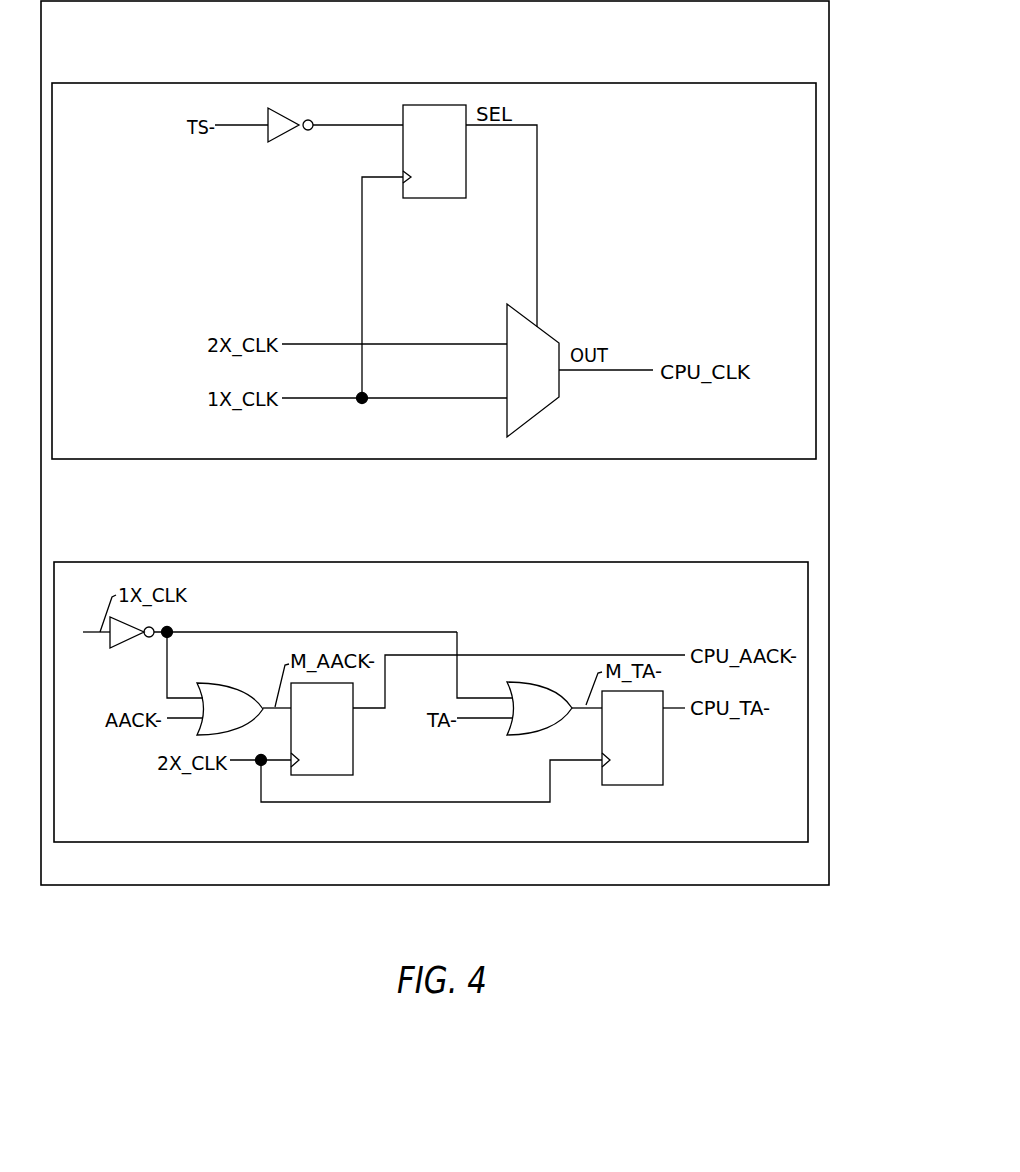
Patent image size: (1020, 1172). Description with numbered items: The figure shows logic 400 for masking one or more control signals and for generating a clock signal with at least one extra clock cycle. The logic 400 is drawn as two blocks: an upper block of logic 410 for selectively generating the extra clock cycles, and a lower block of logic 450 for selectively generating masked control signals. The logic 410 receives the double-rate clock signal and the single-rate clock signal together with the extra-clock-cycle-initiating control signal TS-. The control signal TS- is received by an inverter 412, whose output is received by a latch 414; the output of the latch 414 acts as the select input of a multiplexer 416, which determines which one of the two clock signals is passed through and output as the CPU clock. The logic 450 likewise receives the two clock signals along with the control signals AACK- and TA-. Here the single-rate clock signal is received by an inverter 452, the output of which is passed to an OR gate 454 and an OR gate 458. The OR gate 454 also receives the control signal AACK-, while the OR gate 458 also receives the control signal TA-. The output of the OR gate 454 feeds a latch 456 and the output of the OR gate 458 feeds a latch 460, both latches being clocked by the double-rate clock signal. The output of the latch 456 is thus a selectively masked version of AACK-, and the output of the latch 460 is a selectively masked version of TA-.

The logic 400 is at (155, 57).
The logic for selectively generating the extra clock cycles 410 is at (434, 242).
The inverter 412 is at (267, 143).
The latch 414 is at (457, 189).
The multiplexer 416 is at (551, 370).
The logic for selectively generating masked control signals 450 is at (431, 673).
The inverter 452 is at (112, 648).
The OR gate 454 is at (245, 722).
The latch 456 is at (342, 767).
The OR gate 458 is at (555, 722).
The latch 460 is at (652, 774).